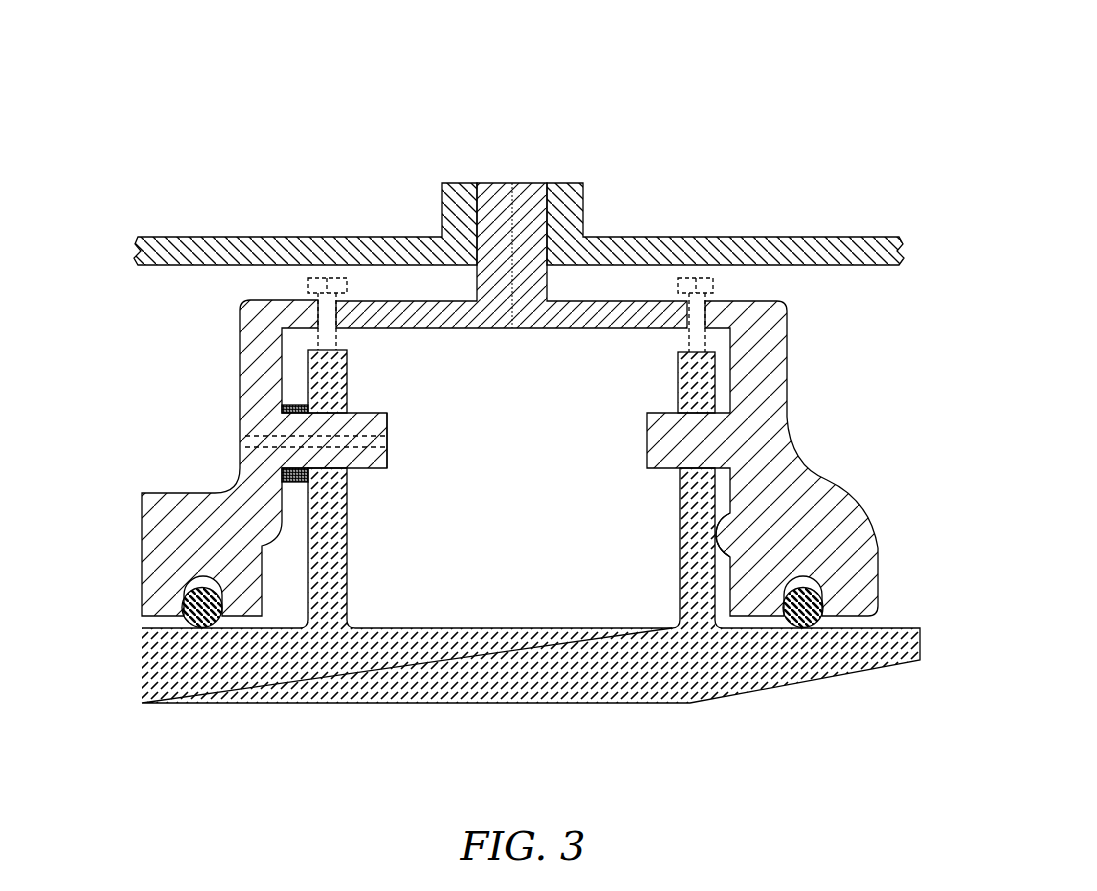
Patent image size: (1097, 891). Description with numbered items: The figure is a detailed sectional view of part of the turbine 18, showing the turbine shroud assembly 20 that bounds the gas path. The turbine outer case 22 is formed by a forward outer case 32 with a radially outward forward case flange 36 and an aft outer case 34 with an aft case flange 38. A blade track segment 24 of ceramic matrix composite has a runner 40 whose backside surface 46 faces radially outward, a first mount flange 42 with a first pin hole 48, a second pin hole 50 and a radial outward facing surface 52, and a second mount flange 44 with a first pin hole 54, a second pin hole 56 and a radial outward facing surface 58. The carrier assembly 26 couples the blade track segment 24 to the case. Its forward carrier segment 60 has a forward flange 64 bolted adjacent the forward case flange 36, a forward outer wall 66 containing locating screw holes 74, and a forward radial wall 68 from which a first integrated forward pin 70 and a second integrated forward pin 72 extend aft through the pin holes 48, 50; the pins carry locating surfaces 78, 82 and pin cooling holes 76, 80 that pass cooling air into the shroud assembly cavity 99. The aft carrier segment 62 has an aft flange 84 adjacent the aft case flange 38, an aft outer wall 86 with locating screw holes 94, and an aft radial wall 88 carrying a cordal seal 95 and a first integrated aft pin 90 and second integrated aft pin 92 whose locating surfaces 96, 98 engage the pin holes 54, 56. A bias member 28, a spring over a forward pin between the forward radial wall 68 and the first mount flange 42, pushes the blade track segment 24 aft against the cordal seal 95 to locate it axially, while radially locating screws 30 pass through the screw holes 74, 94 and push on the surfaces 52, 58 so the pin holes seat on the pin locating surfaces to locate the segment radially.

The turbine 18 is at (814, 90).
The turbine shroud assembly 20 is at (700, 122).
The turbine outer case 22 is at (437, 176).
The blade track segment 24 is at (693, 713).
The carrier assembly 26 is at (768, 289).
The bias member 28 is at (300, 405).
The radially locating screws 30 is at (310, 288).
The forward outer case 32 is at (352, 250).
The aft outer case 34 is at (665, 250).
The forward case flange 36 is at (455, 180).
The aft case flange 38 is at (562, 180).
The runner 40 is at (767, 667).
The first mount flange 42 is at (327, 587).
The second mount flange 44 is at (700, 615).
The backside surface 46 is at (487, 628).
The first pin hole 48 is at (183, 500).
The second pin hole 50 is at (327, 478).
The radial outward facing surface 52 is at (317, 350).
The first pin hole 54 is at (838, 516).
The second pin hole 56 is at (723, 476).
The radial outward facing surface 58 is at (705, 352).
The forward carrier segment 60 is at (231, 356).
The aft carrier segment 62 is at (801, 371).
The forward flange 64 is at (492, 180).
The forward outer wall 66 is at (410, 312).
The forward radial wall 68 is at (262, 390).
The first integrated forward pin 70 is at (186, 542).
The second integrated forward pin 72 is at (330, 500).
The locating screw holes 74 is at (318, 315).
The pin cooling hole 76 is at (238, 441).
The locating surface 78 is at (417, 603).
The pin cooling hole 80 is at (262, 440).
The locating surface 82 is at (385, 413).
The aft flange 84 is at (527, 180).
The aft outer wall 86 is at (590, 315).
The aft radial wall 88 is at (750, 410).
The first integrated aft pin 90 is at (787, 436).
The second integrated aft pin 92 is at (690, 455).
The locating screw holes 94 is at (708, 318).
The cordal seal 95 is at (725, 530).
The locating surface 96 is at (651, 574).
The locating surface 98 is at (665, 413).
The shroud assembly cavity 99 is at (476, 568).